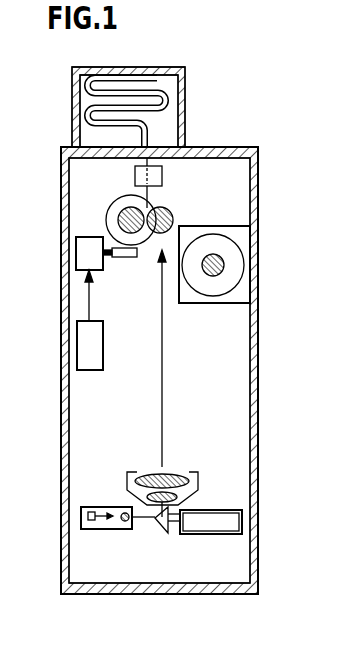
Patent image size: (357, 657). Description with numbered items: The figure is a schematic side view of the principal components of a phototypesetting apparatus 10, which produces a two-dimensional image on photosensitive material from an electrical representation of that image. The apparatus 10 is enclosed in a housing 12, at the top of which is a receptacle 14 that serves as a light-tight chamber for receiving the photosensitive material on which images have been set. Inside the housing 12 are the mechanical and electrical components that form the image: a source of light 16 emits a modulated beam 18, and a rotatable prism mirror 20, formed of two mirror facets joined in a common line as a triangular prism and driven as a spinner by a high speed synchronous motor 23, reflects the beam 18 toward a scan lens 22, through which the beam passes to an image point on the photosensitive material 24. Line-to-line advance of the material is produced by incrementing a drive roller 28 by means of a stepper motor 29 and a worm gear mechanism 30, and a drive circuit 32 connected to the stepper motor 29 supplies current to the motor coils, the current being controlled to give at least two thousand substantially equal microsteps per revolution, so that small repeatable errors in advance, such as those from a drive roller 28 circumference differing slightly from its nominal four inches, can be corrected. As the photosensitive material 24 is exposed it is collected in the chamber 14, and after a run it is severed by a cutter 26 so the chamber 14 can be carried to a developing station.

The phototypesetting apparatus 10 is at (193, 394).
The housing 12 is at (259, 360).
The receptacle 14 is at (186, 100).
The source of light 16 is at (100, 507).
The modulated beam 18 is at (147, 527).
The rotatable prism mirror 20 is at (157, 534).
The scan lens 22 is at (203, 480).
The high speed synchronous motor 23 is at (204, 538).
The photosensitive material 24 is at (180, 228).
The cutter 26 is at (162, 183).
The drive roller 28 is at (129, 207).
The stepper motor 29 is at (99, 237).
The worm gear mechanism 30 is at (131, 264).
The drive circuit 32 is at (104, 347).